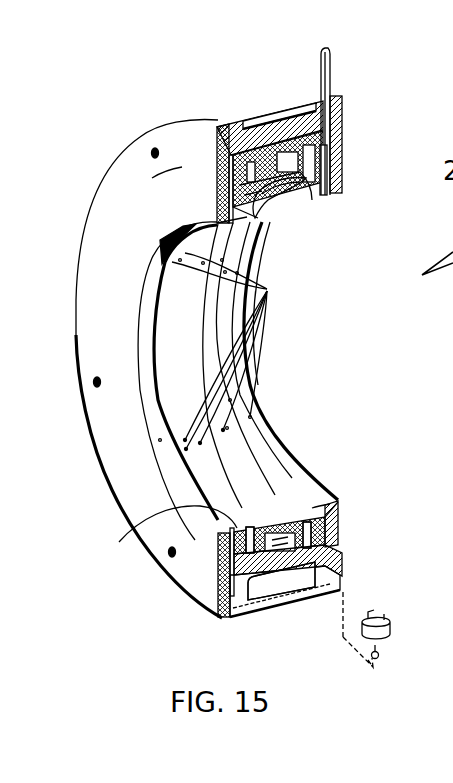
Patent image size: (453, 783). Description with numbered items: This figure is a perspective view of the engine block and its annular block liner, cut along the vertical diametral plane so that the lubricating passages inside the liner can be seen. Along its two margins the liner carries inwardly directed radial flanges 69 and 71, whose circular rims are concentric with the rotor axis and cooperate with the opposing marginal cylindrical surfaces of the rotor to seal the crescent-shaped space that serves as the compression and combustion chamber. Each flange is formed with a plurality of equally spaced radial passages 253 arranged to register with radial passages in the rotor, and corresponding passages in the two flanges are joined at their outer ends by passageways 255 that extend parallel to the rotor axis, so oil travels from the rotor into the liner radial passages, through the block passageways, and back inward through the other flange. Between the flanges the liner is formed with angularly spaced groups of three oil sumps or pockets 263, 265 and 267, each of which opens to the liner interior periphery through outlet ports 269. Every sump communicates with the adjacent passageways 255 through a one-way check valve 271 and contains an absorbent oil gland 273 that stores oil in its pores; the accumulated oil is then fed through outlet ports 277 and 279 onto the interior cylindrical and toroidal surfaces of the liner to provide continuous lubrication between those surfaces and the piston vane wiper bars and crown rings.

The radial flange 69 is at (247, 211).
The radial flange 71 is at (302, 185).
The liner radial passage 253 is at (341, 158).
The passageway 255 is at (293, 57).
The oil sump 263 is at (343, 527).
The oil sump 265 is at (250, 127).
The oil sump 267 is at (208, 545).
The outlet port 269 is at (245, 352).
The one-way check valve 271 is at (380, 655).
The absorbent oil gland 273 is at (327, 537).
The outlet port 277 is at (315, 494).
The outlet port 279 is at (268, 523).